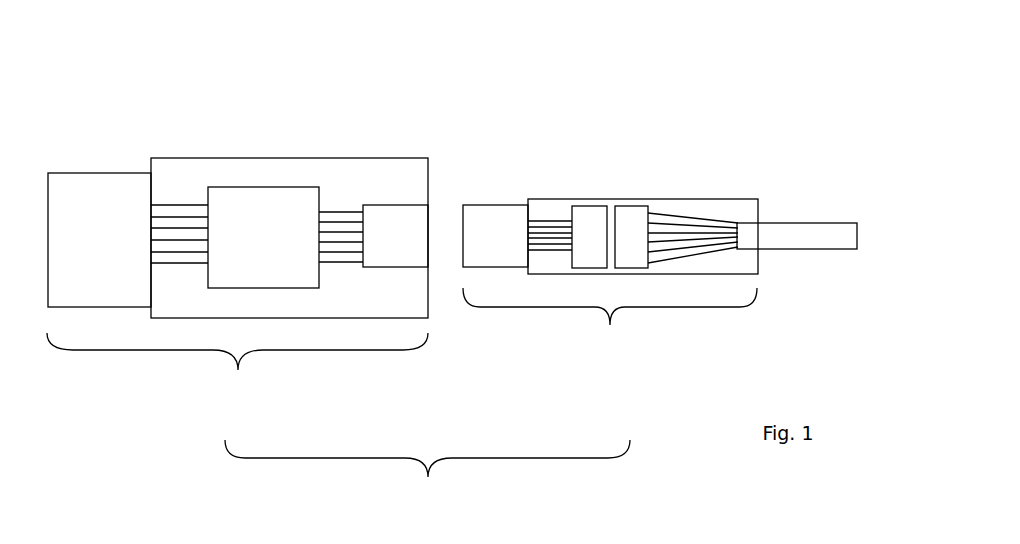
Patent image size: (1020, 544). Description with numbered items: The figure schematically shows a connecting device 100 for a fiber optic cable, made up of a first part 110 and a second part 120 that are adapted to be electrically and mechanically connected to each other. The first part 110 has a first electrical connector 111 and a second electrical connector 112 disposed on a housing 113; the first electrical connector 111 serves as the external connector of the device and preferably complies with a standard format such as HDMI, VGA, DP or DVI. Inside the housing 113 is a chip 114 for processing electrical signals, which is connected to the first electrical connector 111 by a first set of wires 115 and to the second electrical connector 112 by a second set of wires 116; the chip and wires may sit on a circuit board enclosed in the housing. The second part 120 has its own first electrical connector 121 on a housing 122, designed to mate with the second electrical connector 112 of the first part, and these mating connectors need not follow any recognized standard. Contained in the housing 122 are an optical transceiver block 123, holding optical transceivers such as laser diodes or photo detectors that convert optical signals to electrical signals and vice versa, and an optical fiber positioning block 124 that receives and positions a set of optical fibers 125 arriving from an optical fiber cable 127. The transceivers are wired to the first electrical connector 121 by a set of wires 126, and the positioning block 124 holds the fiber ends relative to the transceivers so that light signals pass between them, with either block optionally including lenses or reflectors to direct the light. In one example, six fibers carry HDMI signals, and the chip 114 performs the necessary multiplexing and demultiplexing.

The connecting device 100 is at (427, 478).
The first part 110 is at (237, 373).
The first electrical connector 111 is at (85, 173).
The second electrical connector 112 is at (385, 205).
The housing 113 is at (196, 158).
The chip 114 is at (271, 187).
The first set of wires 115 is at (182, 205).
The second set of wires 116 is at (344, 213).
The second part 120 is at (610, 329).
The first electrical connector 121 is at (494, 215).
The housing 122 is at (537, 199).
The optical transceiver block 123 is at (592, 206).
The optical fiber positioning block 124 is at (629, 206).
The optical fibers 125 is at (685, 214).
The set of wires 126 is at (555, 221).
The optical fiber cable 127 is at (787, 225).